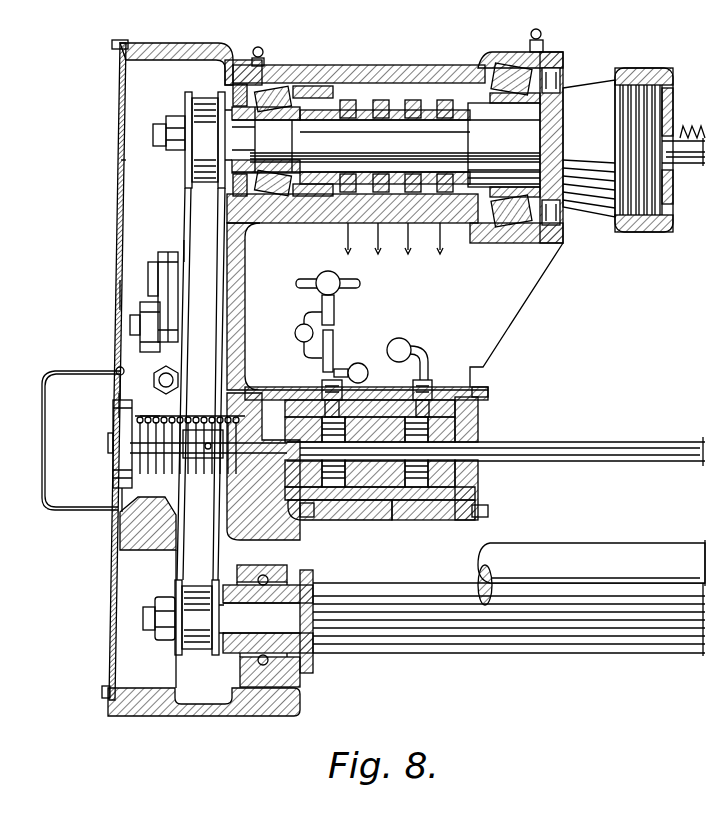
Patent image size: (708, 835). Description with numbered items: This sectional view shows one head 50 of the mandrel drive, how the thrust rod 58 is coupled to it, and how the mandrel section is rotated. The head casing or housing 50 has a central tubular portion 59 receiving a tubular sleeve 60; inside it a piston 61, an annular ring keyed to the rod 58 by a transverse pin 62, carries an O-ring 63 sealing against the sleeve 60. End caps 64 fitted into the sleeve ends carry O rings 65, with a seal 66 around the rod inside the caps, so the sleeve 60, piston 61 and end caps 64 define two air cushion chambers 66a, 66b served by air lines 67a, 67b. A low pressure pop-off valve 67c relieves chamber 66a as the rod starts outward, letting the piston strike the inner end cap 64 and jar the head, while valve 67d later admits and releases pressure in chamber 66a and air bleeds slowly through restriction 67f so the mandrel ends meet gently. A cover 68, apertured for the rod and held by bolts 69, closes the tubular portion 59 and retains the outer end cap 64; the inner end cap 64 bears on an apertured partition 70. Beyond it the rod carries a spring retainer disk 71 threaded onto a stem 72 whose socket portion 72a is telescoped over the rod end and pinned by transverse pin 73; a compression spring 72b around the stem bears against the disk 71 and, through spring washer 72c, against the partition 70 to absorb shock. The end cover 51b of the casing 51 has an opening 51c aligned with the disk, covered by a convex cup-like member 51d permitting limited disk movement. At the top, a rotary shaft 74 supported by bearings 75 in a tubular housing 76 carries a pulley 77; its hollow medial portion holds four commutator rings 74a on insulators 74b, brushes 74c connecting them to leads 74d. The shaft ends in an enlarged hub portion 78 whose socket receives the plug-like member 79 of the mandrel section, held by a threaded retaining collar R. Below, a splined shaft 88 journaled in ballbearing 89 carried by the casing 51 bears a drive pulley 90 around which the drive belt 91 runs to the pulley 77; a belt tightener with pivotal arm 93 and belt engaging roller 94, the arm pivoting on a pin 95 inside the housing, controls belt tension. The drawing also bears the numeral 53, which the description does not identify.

The head 50 is at (106, 160).
The casing 51 is at (197, 43).
The end cover 51b is at (119, 293).
The opening 51c is at (117, 403).
The convex cup-like member 51d is at (44, 388).
The guide bar 53 is at (608, 548).
The thrust rod 58 is at (620, 441).
The central tubular portion 59 is at (487, 372).
The tubular sleeve 60 is at (345, 489).
The piston 61 is at (377, 404).
The transverse pin 62 is at (375, 452).
The O-ring 63 is at (366, 505).
The end caps 64 is at (312, 490).
The O rings 65 is at (320, 398).
The seal 66 is at (418, 505).
The air cushion chamber 66a is at (312, 519).
The air cushion chamber 66b is at (404, 521).
The air line 67a is at (428, 372).
The air line 67b is at (338, 346).
The low pressure pop-off valve 67c is at (360, 364).
The valve 67d is at (342, 282).
The restriction 67f is at (336, 334).
The cover 68 is at (482, 428).
The bolts 69 is at (490, 398).
The apertured partition 70 is at (270, 396).
The spring retainer disk 71 is at (112, 468).
The stem 72 is at (184, 470).
The socket portion 72a is at (148, 523).
The compression spring 72b is at (178, 416).
The spring washer 72c is at (263, 466).
The transverse pin 73 is at (208, 442).
The rotary shaft 74 is at (300, 226).
The commutator rings 74a is at (347, 88).
The insulators 74b is at (433, 88).
The brushes 74c is at (352, 215).
The leads 74d is at (408, 240).
The bearings 75 is at (276, 80).
The tubular housing 76 is at (397, 68).
The pulley 77 is at (186, 104).
The enlarged hub portion 78 is at (593, 85).
The plug-like member 79 is at (667, 182).
The splined shaft 88 is at (552, 640).
The ballbearing 89 is at (300, 680).
The drive pulley 90 is at (220, 660).
The drive belt 91 is at (184, 558).
The pivotal arm 93 is at (158, 280).
The belt engaging roller 94 is at (184, 248).
The pin 95 is at (118, 328).
The retaining collar R is at (666, 68).